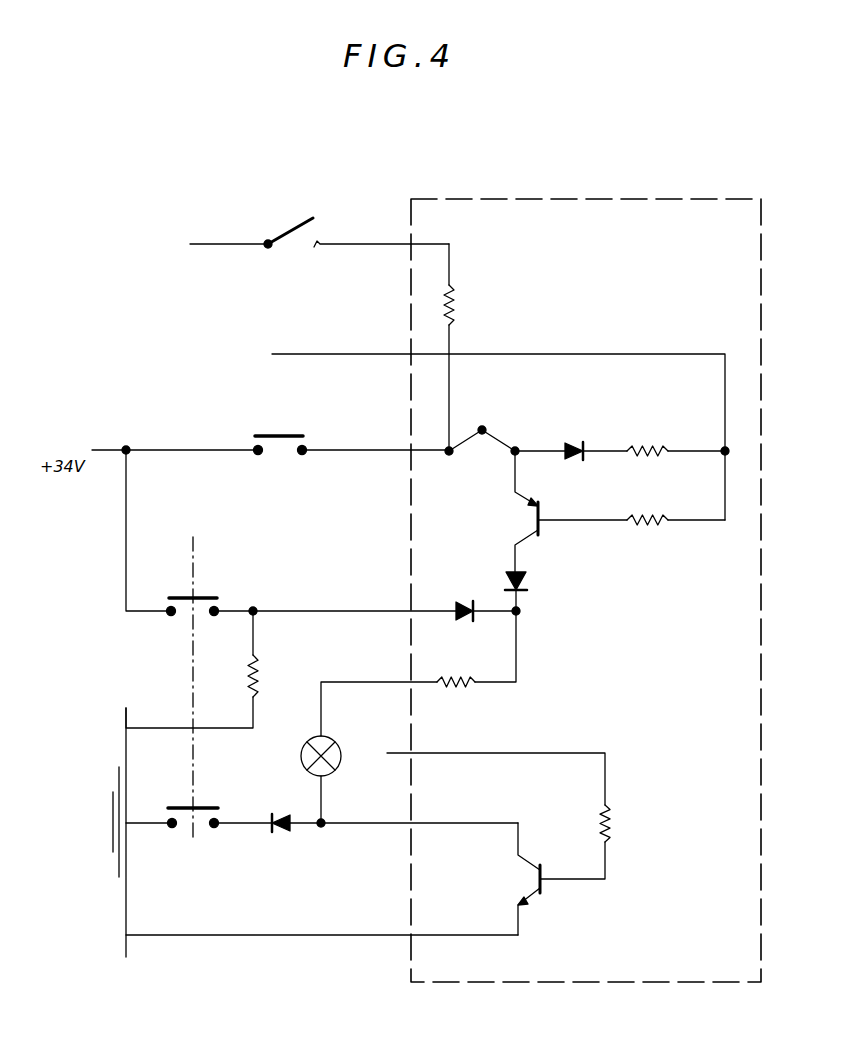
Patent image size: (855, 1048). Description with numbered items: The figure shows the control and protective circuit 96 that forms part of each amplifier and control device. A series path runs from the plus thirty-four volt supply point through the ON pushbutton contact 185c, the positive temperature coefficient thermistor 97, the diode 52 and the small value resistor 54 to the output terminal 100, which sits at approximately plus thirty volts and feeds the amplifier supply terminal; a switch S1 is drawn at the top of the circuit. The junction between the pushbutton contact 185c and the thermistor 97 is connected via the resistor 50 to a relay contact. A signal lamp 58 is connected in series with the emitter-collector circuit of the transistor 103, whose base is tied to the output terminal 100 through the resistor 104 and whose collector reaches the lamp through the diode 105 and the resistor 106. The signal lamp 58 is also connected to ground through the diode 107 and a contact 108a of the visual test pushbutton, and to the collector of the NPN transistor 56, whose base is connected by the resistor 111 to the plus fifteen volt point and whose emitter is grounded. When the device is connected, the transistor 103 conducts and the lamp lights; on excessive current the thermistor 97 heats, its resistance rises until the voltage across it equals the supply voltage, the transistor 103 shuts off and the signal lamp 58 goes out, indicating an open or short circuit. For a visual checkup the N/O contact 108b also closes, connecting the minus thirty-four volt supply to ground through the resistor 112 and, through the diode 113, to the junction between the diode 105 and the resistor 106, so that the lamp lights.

The control and protective circuit 96 is at (626, 186).
The switch S1 is at (319, 242).
The resistor 50 is at (456, 301).
The output terminal 100 is at (302, 357).
The pushbutton contact 185c is at (250, 426).
The thermistor 97 is at (489, 445).
The diode 52 is at (577, 443).
The resistor 54 is at (650, 454).
The resistor 104 is at (650, 526).
The transistor 103 is at (532, 523).
The diode 105 is at (522, 578).
The diode 113 is at (455, 604).
The N/O contact 108b is at (211, 603).
The resistor 112 is at (258, 691).
The resistor 106 is at (451, 690).
The signal lamp 58 is at (335, 746).
The relay contact 108a is at (230, 812).
The diode 107 is at (292, 829).
The resistor 111 is at (612, 813).
The switching transistor 56 is at (546, 899).